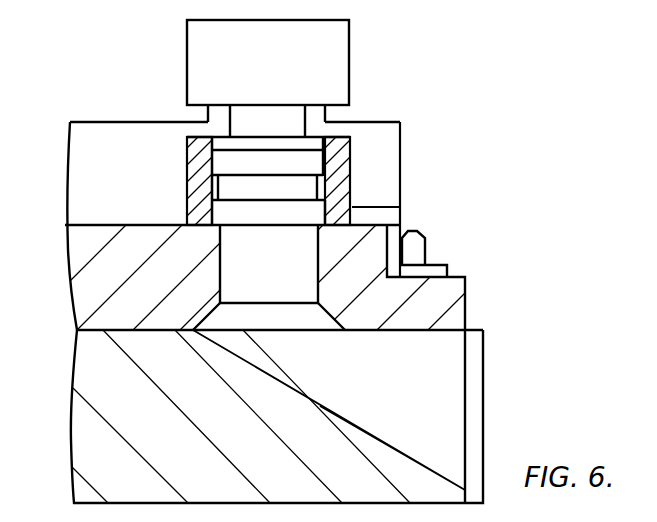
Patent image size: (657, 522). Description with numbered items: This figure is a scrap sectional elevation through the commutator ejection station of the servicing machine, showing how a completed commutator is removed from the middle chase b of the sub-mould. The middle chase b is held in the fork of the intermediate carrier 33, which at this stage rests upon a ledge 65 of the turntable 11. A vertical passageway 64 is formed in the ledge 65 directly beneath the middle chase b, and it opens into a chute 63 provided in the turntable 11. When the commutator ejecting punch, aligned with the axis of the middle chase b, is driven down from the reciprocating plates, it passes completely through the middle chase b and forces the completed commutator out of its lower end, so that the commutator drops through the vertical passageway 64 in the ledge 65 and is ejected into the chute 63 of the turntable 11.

The turntable 11 is at (88, 430).
The intermediate carrier 33 is at (333, 203).
The chute 63 is at (452, 381).
The vertical passageway 64 is at (290, 274).
The ledge 65 is at (95, 290).
The middle chase b is at (308, 160).